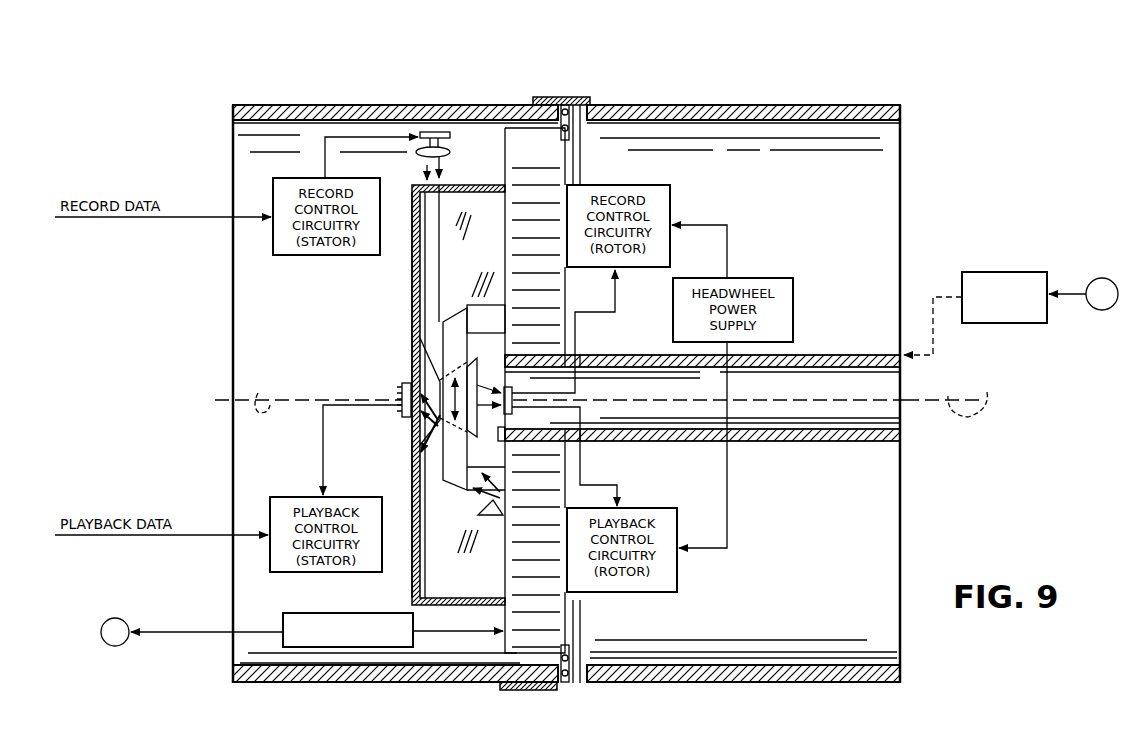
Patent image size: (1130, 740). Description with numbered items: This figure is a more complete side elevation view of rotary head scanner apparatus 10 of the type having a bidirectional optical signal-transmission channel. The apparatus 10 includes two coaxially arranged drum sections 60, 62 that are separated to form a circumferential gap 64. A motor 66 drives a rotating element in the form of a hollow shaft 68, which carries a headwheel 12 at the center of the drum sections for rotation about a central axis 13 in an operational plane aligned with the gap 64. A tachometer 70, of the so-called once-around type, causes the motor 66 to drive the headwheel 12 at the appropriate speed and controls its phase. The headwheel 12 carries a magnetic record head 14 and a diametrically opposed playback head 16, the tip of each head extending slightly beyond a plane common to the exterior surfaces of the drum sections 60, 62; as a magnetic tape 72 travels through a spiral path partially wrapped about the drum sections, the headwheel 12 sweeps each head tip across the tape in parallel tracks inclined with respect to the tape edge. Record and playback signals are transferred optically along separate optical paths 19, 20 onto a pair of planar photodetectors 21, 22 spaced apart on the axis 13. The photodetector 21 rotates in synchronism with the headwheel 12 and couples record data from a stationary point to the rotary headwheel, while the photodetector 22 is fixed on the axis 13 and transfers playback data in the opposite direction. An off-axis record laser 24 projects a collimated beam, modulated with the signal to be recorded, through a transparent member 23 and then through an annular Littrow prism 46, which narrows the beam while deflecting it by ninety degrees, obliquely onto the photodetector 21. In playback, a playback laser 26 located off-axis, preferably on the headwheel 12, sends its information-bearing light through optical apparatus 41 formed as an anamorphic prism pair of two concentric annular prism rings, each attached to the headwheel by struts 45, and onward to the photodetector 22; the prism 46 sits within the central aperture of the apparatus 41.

The rotary head scanner apparatus 10 is at (580, 357).
The headwheel 12 is at (512, 573).
The central axis 13 is at (262, 388).
The magnetic record head 14 is at (569, 141).
The playback head 16 is at (566, 642).
The optical record path 19 is at (425, 165).
The optical playback path 20 is at (417, 437).
The photodetector 21 is at (513, 400).
The photodetector 22 is at (408, 381).
The transparent member 23 is at (411, 300).
The laser 24 is at (450, 134).
The playback laser 26 is at (493, 518).
The anamorphic prism pair 41 is at (444, 485).
The struts 45 is at (503, 306).
The annular Littrow prism 46 is at (478, 372).
The drum section 60 is at (368, 104).
The drum section 62 is at (713, 105).
The circumferential gap 64 is at (573, 100).
The motor 66 is at (1015, 272).
The hollow shaft 68 is at (683, 446).
The tachometer 70 is at (295, 613).
The magnetic tape 72 is at (550, 97).